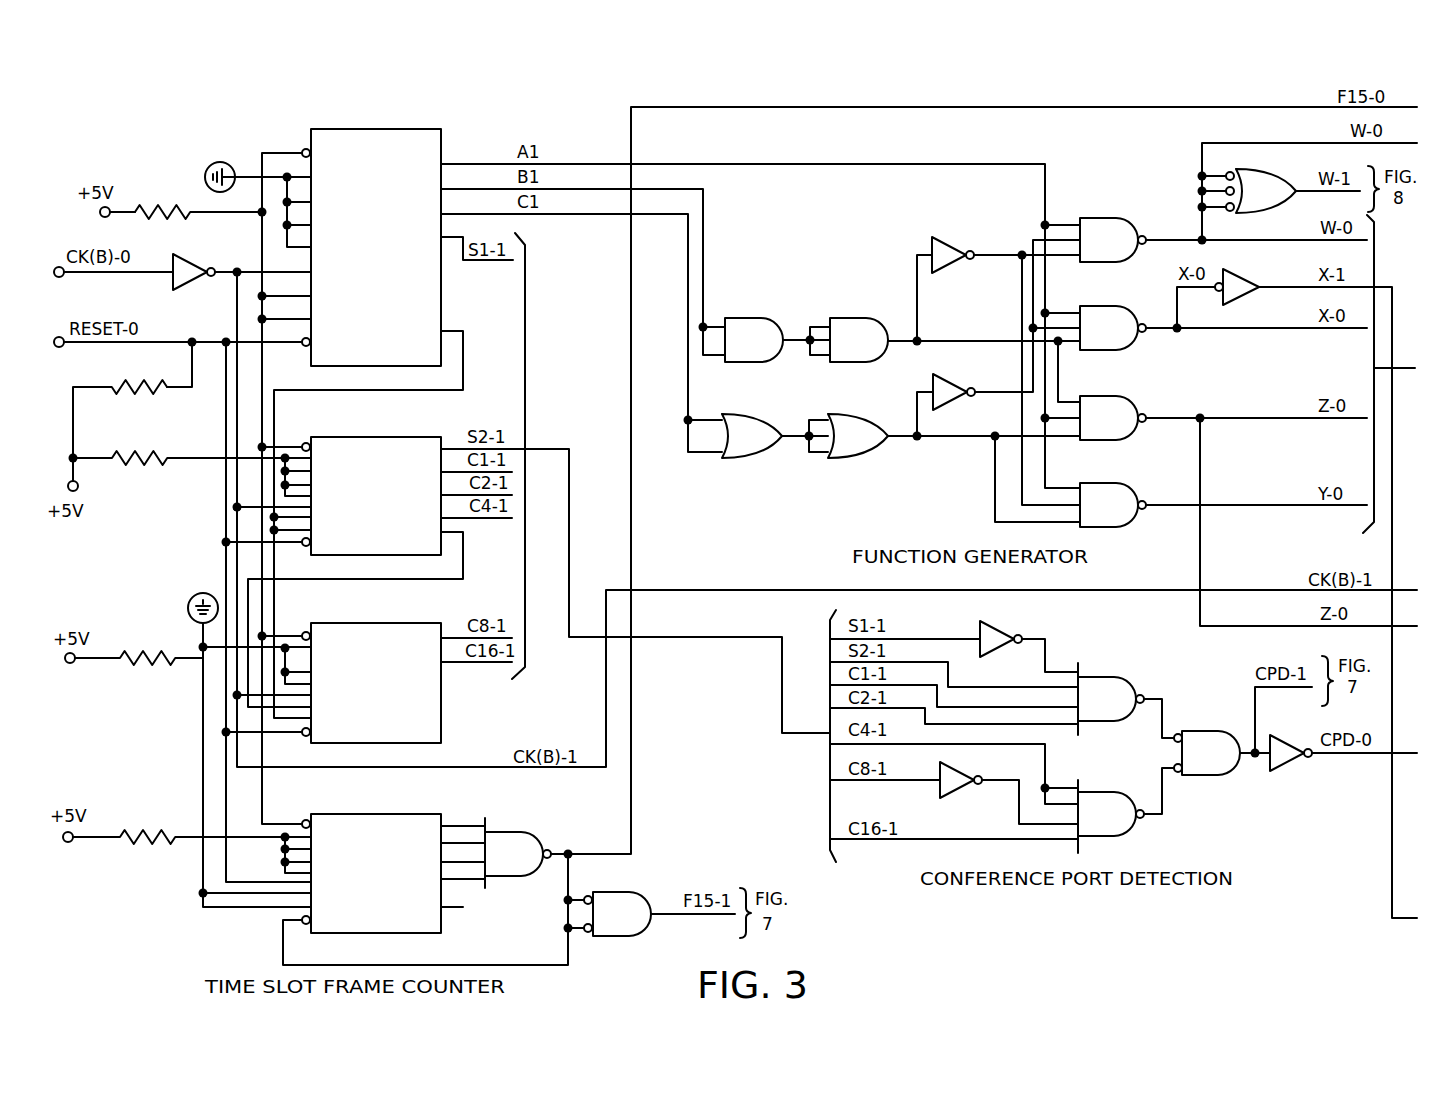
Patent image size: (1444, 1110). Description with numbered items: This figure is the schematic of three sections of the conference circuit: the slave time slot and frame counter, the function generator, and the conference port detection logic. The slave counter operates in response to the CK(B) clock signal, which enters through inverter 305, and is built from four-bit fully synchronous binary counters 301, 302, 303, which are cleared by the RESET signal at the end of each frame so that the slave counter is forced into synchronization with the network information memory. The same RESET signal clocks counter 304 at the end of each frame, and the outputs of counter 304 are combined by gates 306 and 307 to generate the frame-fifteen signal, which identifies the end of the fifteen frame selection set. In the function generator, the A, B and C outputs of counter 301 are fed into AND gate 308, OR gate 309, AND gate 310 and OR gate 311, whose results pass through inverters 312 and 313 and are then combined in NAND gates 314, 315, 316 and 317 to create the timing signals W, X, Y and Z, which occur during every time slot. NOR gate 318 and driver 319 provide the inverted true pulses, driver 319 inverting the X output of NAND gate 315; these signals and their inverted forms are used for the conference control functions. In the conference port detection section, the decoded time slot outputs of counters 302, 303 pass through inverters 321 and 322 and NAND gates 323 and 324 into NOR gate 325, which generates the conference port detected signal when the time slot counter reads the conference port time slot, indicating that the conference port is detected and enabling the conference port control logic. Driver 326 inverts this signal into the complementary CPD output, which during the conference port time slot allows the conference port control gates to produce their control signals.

The binary counter 301 is at (425, 129).
The binary counter 302 is at (395, 437).
The binary counter 303 is at (393, 623).
The counter 304 is at (393, 814).
The inverter 305 is at (186, 256).
The gate 306 is at (510, 831).
The gate 307 is at (613, 892).
The AND gate 308 is at (745, 318).
The OR gate 309 is at (745, 414).
The AND gate 310 is at (853, 318).
The OR gate 311 is at (855, 414).
The inverter 312 is at (945, 240).
The inverter 313 is at (946, 377).
The NAND gate 314 is at (1108, 218).
The NAND gate 315 is at (1110, 306).
The NAND gate 316 is at (1118, 396).
The NAND gate 317 is at (1118, 483).
The NOR gate 318 is at (1262, 169).
The driver 319 is at (1238, 272).
The inverter 321 is at (992, 624).
The inverter 322 is at (954, 765).
The NAND gate 323 is at (1108, 677).
The NAND gate 324 is at (1103, 792).
The NOR gate 325 is at (1205, 731).
The driver 326 is at (1288, 766).